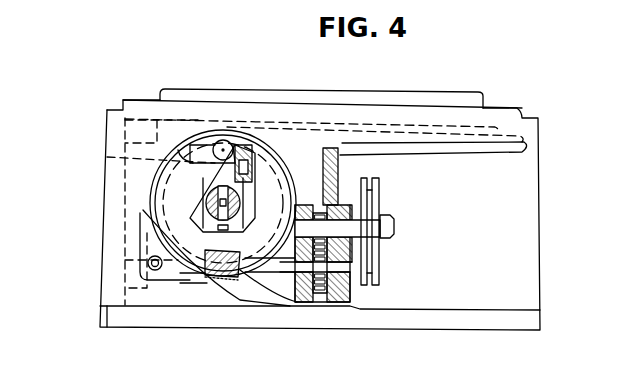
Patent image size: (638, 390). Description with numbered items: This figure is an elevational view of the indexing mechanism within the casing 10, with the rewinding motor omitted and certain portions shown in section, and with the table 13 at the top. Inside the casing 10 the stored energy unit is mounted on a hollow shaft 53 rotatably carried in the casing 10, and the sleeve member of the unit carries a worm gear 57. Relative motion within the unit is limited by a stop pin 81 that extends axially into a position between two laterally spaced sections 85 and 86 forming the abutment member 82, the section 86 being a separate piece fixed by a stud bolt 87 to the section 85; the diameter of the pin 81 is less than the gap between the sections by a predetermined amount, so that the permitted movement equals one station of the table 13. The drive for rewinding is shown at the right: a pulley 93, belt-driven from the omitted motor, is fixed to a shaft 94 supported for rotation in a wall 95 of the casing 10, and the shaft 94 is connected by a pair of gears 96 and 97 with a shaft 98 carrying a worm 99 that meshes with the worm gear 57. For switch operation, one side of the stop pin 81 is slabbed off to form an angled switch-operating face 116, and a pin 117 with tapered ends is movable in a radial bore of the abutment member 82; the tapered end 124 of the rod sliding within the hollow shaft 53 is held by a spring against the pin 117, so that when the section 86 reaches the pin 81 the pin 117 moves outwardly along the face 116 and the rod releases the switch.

The casing 10 is at (543, 206).
The table 13 is at (462, 100).
The shaft 53 is at (207, 197).
The worm gear 57 is at (282, 164).
The pin 81 is at (238, 145).
The abutment member 82 is at (178, 150).
The section 85 is at (225, 138).
The section 86 is at (247, 145).
The stud bolt 87 is at (254, 162).
The pulley 93 is at (375, 200).
The shaft 94 is at (397, 229).
The wall 95 is at (338, 184).
The gear 96 is at (320, 216).
The gear 97 is at (320, 293).
The shaft 98 is at (263, 268).
The worm 99 is at (235, 275).
The switch-operating face 116 is at (188, 162).
The pin 117 is at (107, 157).
The end 124 is at (207, 202).